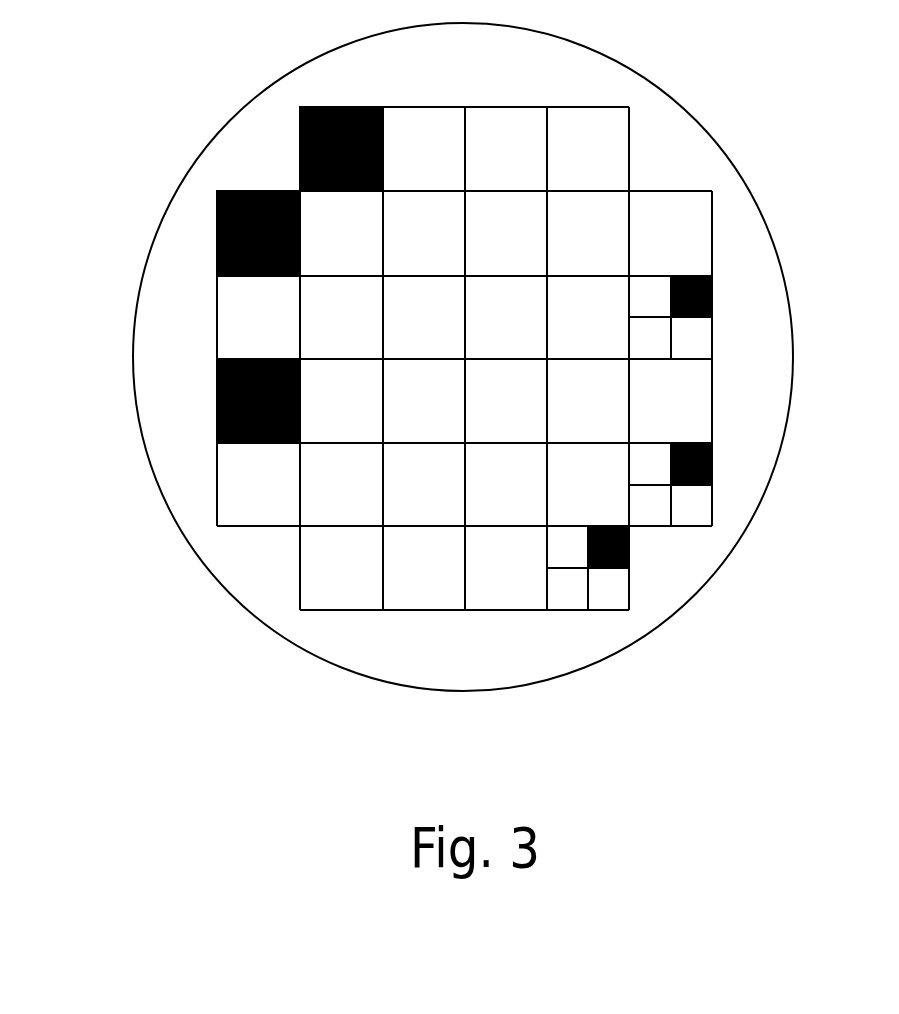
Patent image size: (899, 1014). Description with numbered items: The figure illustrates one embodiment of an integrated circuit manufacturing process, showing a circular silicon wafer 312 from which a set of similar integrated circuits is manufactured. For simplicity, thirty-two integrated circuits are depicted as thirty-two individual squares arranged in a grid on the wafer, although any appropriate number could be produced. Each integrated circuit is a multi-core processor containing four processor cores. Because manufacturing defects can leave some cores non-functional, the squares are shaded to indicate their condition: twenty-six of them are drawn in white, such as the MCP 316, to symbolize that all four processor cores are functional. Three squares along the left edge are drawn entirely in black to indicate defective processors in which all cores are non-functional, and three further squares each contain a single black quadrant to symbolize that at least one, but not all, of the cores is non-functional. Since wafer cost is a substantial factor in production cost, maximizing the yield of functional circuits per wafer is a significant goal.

The silicon wafer 312 is at (363, 672).
The MCP 316 is at (614, 129).